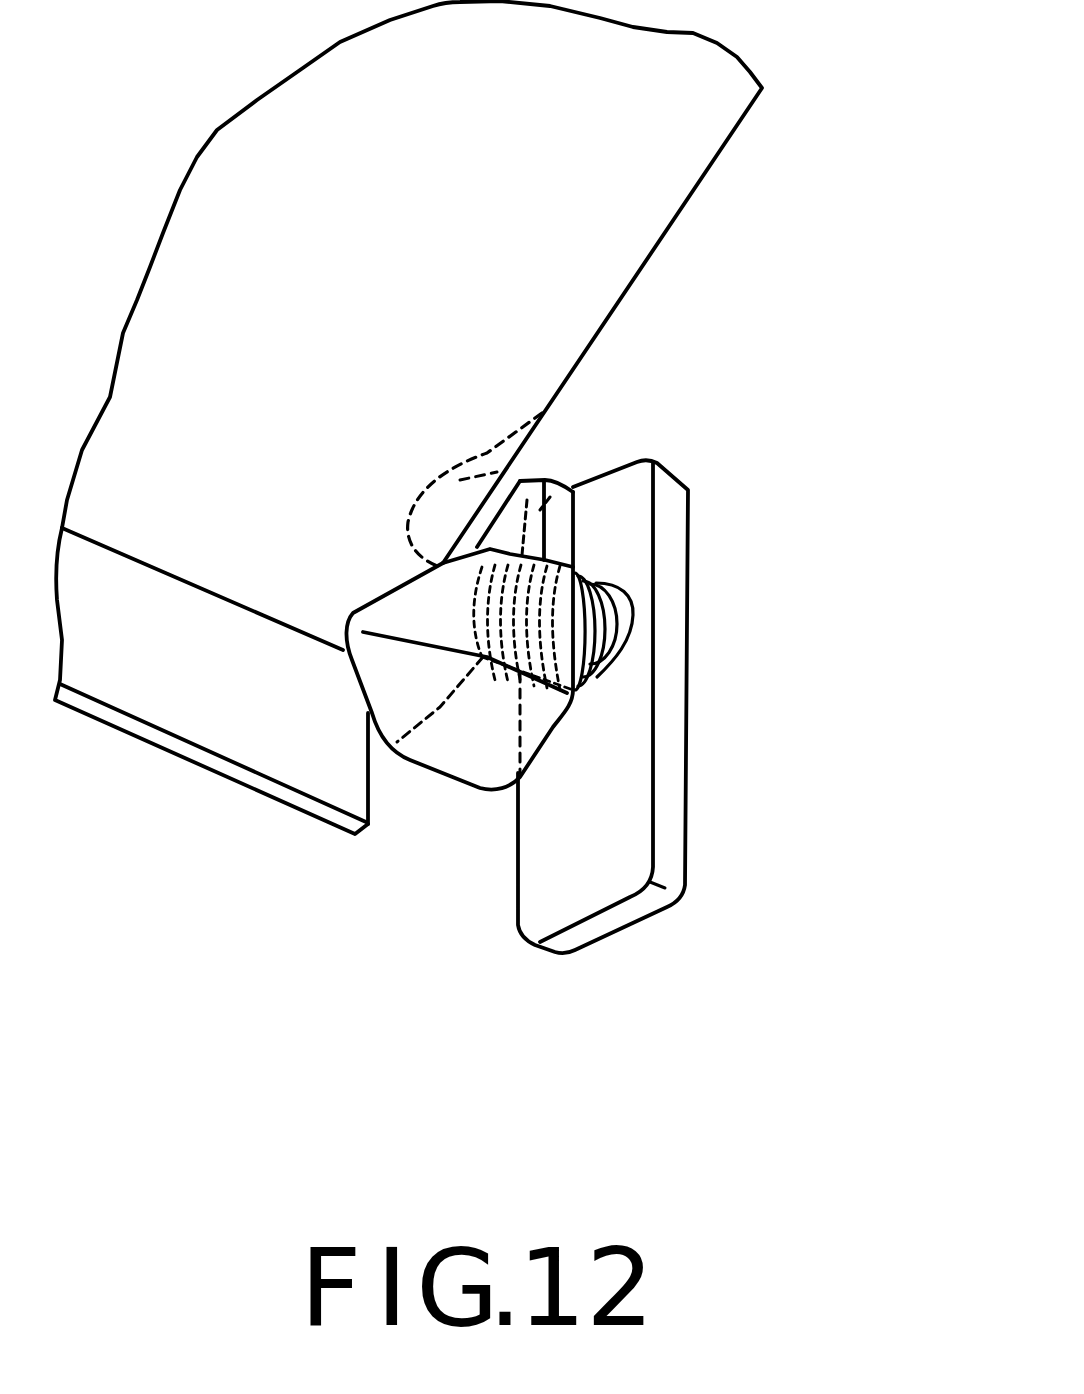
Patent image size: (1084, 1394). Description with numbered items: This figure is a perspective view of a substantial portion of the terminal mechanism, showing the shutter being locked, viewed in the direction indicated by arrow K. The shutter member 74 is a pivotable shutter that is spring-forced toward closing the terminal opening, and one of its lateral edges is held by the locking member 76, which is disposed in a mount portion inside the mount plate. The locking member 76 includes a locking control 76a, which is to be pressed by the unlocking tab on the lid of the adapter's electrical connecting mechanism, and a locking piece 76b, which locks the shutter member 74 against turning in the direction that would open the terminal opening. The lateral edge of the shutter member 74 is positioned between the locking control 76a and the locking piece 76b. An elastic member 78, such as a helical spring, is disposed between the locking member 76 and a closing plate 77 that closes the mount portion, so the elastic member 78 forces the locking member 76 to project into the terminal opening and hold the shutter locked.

The shutter member 74 is at (700, 90).
The locking member 76 is at (523, 642).
The locking control 76a is at (400, 708).
The locking piece 76b is at (545, 412).
The closing plate 77 is at (665, 842).
The elastic member 78 is at (605, 622).
The viewing direction K is at (678, 380).